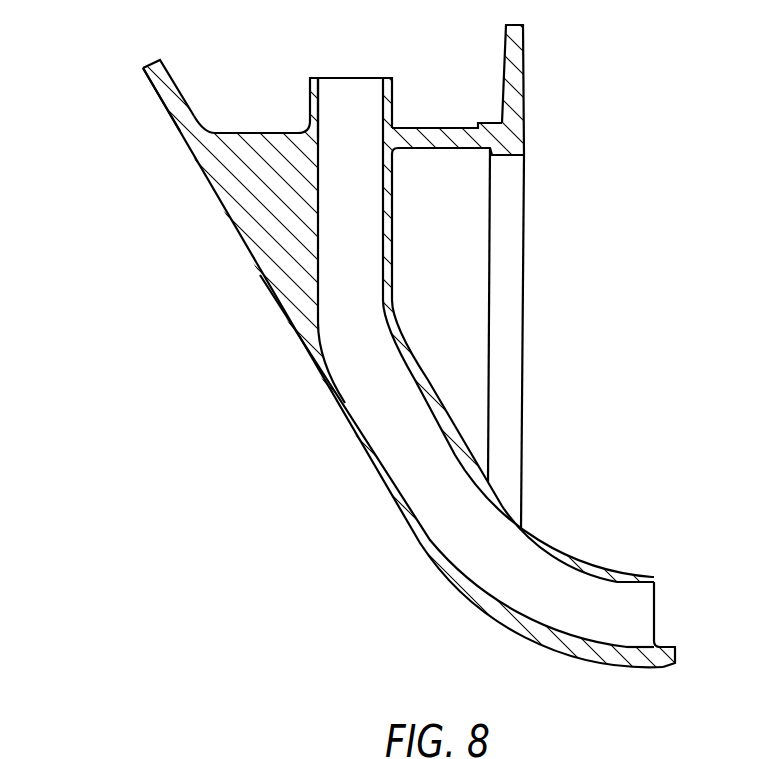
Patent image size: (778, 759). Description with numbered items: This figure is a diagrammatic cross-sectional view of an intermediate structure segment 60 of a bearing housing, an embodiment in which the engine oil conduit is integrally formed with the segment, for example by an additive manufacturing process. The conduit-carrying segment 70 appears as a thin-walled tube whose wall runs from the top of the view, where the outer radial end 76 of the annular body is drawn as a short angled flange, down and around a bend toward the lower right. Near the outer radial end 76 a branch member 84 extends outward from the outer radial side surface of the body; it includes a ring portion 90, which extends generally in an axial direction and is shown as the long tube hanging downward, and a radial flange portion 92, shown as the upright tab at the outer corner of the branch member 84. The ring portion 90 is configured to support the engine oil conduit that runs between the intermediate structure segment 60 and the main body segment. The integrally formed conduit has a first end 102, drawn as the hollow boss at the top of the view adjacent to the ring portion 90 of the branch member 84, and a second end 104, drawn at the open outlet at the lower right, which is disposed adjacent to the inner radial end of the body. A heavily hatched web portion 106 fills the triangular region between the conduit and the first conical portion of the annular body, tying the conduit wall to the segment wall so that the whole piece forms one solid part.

The intermediate structure segment 60 is at (389, 379).
The tube 70 is at (268, 328).
The outer radial end 76 is at (148, 63).
The branch member 84 is at (389, 379).
The ring portion 90 is at (433, 150).
The radial flange portion 92 is at (527, 80).
The first end 102 is at (360, 78).
The second end 104 is at (657, 612).
The web portion 106 is at (263, 195).